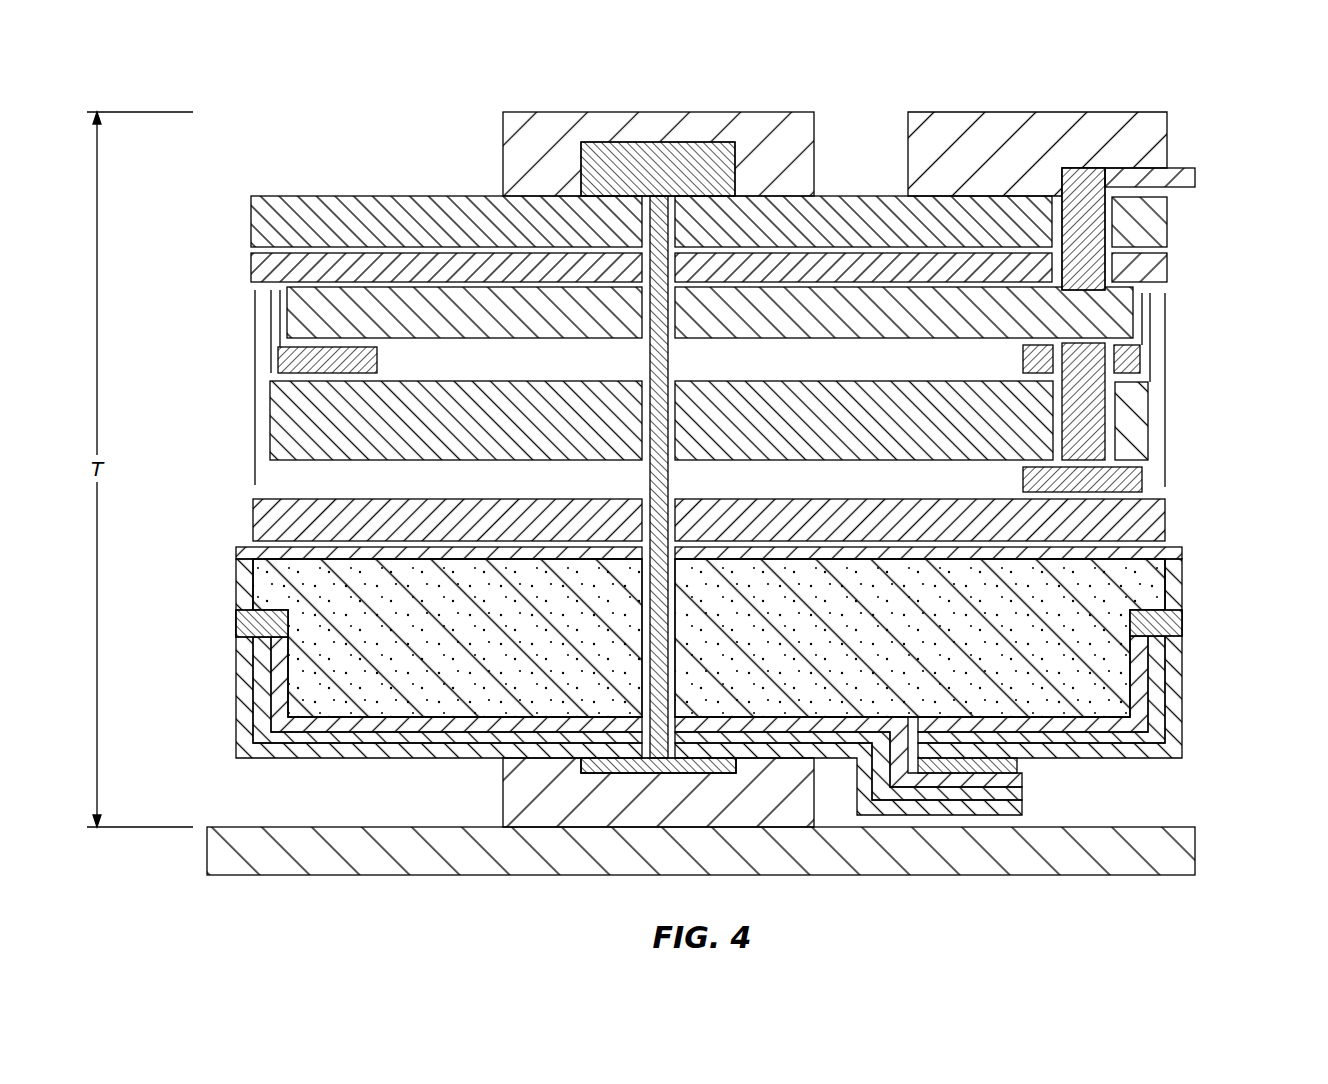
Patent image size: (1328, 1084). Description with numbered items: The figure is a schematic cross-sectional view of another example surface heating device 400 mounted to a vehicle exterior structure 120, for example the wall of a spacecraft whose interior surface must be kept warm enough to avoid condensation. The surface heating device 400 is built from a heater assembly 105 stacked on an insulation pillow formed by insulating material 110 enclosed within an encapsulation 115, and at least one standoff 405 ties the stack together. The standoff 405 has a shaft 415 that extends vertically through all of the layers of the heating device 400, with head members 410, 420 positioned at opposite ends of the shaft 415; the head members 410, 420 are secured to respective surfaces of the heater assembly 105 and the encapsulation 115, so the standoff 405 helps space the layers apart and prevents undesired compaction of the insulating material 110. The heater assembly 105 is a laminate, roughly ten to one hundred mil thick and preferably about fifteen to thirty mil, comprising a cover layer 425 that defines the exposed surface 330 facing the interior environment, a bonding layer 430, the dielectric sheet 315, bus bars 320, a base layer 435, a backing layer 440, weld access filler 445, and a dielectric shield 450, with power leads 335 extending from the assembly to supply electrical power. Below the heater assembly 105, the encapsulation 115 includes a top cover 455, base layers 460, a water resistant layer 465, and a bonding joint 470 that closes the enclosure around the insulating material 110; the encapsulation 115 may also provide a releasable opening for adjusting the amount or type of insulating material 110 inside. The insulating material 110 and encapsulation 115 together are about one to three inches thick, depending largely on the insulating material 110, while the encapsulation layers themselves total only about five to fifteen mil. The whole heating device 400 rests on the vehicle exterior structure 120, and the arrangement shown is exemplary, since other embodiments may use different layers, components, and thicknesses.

The surface heating device 400 is at (1230, 94).
The standoff 405 is at (664, 134).
The head member 410 is at (639, 176).
The shaft 415 is at (668, 358).
The head member 420 is at (773, 803).
The cover layer 425 is at (1150, 222).
The bonding layer 430 is at (1155, 265).
The exposed surface 330 is at (302, 196).
The power leads 335 is at (1175, 176).
The dielectric sheet 315 is at (1112, 318).
The bus bars 320 is at (312, 370).
The base layer 435 is at (1141, 419).
The weld access filler 445 is at (1092, 447).
The dielectric shield 450 is at (1100, 487).
The backing layer 440 is at (1152, 525).
The heater assembly 105 is at (205, 197).
The encapsulation 115 is at (230, 578).
The insulating material 110 is at (312, 683).
The top cover 455 is at (1176, 580).
The base layers 460 is at (1148, 735).
The water resistant layer 465 is at (1178, 741).
The bonding joint 470 is at (250, 618).
The vehicle exterior structure 120 is at (1010, 850).